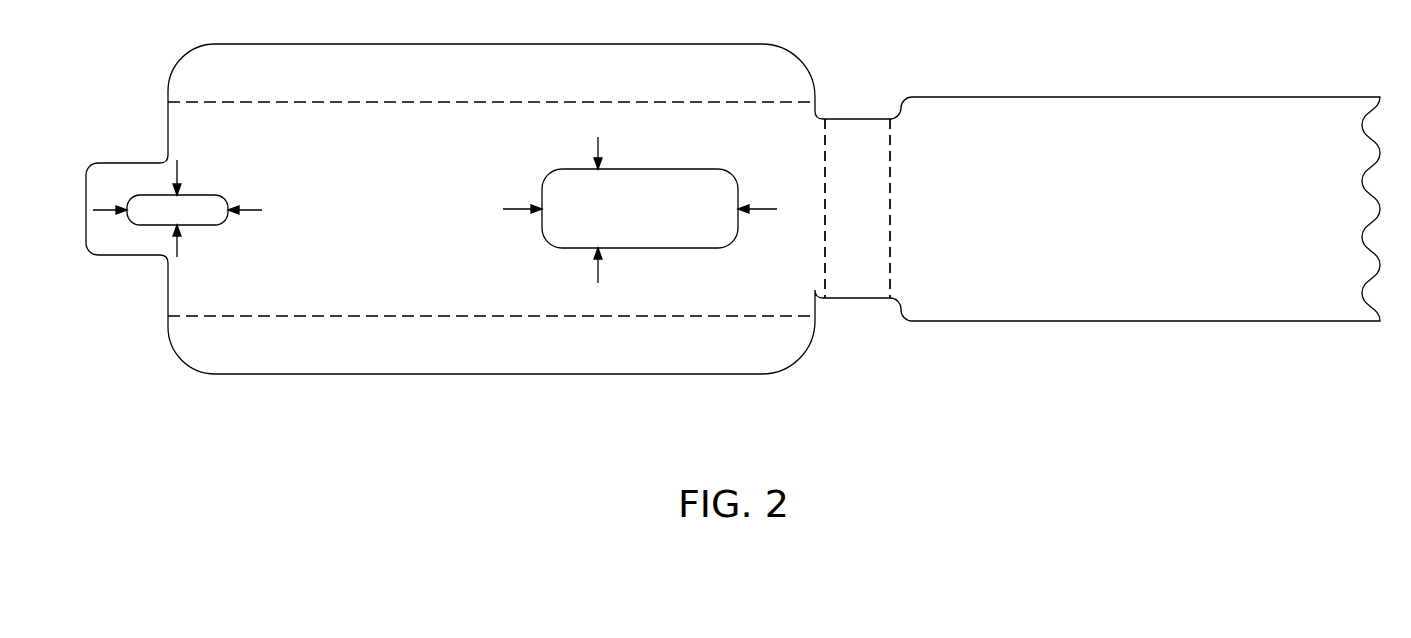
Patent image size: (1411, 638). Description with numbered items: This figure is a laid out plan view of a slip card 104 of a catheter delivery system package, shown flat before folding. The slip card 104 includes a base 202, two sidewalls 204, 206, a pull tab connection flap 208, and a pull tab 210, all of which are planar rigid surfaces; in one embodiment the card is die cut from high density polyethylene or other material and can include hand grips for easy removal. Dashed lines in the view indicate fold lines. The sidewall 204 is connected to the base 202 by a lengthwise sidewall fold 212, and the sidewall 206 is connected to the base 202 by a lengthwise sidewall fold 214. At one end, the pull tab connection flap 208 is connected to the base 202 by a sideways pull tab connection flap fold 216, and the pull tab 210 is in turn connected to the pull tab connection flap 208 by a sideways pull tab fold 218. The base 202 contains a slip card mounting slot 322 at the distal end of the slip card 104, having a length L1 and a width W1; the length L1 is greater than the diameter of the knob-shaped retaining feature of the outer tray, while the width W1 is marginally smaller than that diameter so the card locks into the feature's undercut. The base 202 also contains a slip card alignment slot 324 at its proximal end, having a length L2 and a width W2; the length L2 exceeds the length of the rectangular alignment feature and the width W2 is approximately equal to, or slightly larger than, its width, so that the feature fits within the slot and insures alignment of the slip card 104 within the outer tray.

The slip card 104 is at (483, 405).
The base 202 is at (355, 219).
The sidewall 204 is at (488, 357).
The sidewall 206 is at (532, 81).
The pull tab connection flap 208 is at (880, 194).
The pull tab 210 is at (1198, 209).
The lengthwise sidewall fold 212 is at (432, 316).
The lengthwise sidewall fold 214 is at (412, 104).
The sideways pull tab connection flap fold 216 is at (825, 249).
The sideways pull tab fold 218 is at (890, 268).
The slip card mounting slot 322 is at (221, 188).
The slip card alignment slot 324 is at (697, 168).
The width of slip card mounting slot W1 is at (178, 173).
The length of slip card mounting slot L1 is at (252, 212).
The width of slip card alignment slot W2 is at (598, 148).
The length of slip card alignment slot L2 is at (517, 208).